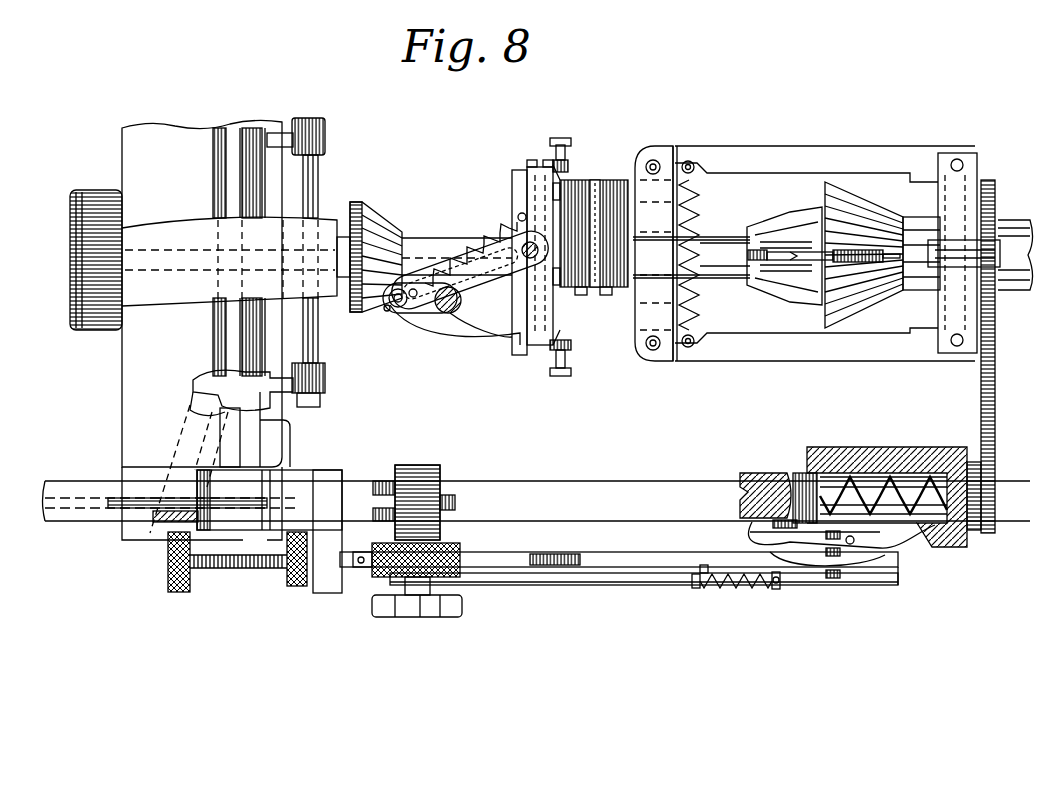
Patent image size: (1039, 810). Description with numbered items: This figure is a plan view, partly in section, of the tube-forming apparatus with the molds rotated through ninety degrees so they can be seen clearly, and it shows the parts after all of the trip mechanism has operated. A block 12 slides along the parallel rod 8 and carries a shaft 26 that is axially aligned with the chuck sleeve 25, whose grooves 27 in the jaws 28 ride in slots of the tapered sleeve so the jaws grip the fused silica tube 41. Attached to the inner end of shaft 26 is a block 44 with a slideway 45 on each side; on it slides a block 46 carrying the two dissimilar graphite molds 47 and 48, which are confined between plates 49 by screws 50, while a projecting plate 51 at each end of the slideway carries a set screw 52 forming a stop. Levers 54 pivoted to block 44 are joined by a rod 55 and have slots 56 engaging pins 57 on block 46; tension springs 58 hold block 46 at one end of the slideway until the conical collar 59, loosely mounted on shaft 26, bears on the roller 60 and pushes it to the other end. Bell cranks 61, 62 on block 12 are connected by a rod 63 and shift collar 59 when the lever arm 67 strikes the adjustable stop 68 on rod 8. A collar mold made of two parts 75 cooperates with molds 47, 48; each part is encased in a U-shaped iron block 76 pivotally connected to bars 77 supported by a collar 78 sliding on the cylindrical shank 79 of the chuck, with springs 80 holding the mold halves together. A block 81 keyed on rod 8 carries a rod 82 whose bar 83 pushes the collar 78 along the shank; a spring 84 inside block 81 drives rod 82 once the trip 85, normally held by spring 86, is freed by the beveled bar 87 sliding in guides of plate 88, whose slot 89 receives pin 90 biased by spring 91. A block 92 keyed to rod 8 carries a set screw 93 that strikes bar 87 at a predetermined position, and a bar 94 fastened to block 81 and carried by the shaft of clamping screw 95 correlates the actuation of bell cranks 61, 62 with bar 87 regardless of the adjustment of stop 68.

The rod 8 is at (573, 492).
The block 12 is at (202, 330).
The chuck sleeve 25 is at (870, 210).
The shaft 26 is at (416, 256).
The grooves 27 is at (805, 210).
The jaws 28 is at (770, 252).
The fused silica tube 41 is at (712, 245).
The block 44 is at (520, 320).
The slideway 45 is at (555, 350).
The block 46 is at (540, 200).
The graphite mold 47 is at (580, 185).
The graphite mold 48 is at (610, 296).
The plates 49 is at (600, 190).
The screws 50 is at (588, 297).
The projecting plate 51 is at (532, 180).
The set screw 52 is at (561, 138).
The levers 54 is at (425, 312).
The rod 55 is at (395, 304).
The slots 56 is at (470, 269).
The pins 57 is at (525, 248).
The tension springs 58 is at (458, 270).
The collar 59 is at (378, 222).
The roller 60 is at (390, 318).
The bell crank 61 is at (270, 395).
The bell crank 62 is at (280, 133).
The rod 63 is at (320, 180).
The lever arm 67 is at (160, 525).
The stop 68 is at (290, 495).
The collar mold part 75 is at (640, 180).
The U-shaped iron block 76 is at (686, 165).
The bars 77 is at (808, 158).
The collar 78 is at (960, 200).
The cylindrical shank 79 is at (915, 285).
The springs 80 is at (700, 296).
The block 81 is at (870, 462).
The rod 82 is at (970, 535).
The bar or plate 83 is at (995, 375).
The spring 84 is at (912, 490).
The trip 85 is at (770, 522).
The spring 86 is at (918, 545).
The bar or rod 87 is at (630, 552).
The plate 88 is at (735, 592).
The slot 89 is at (805, 580).
The pin 90 is at (765, 592).
The spring 91 is at (712, 592).
The block 92 is at (326, 585).
The set screw 93 is at (240, 566).
The bar 94 is at (588, 586).
The clamping screw 95 is at (420, 617).